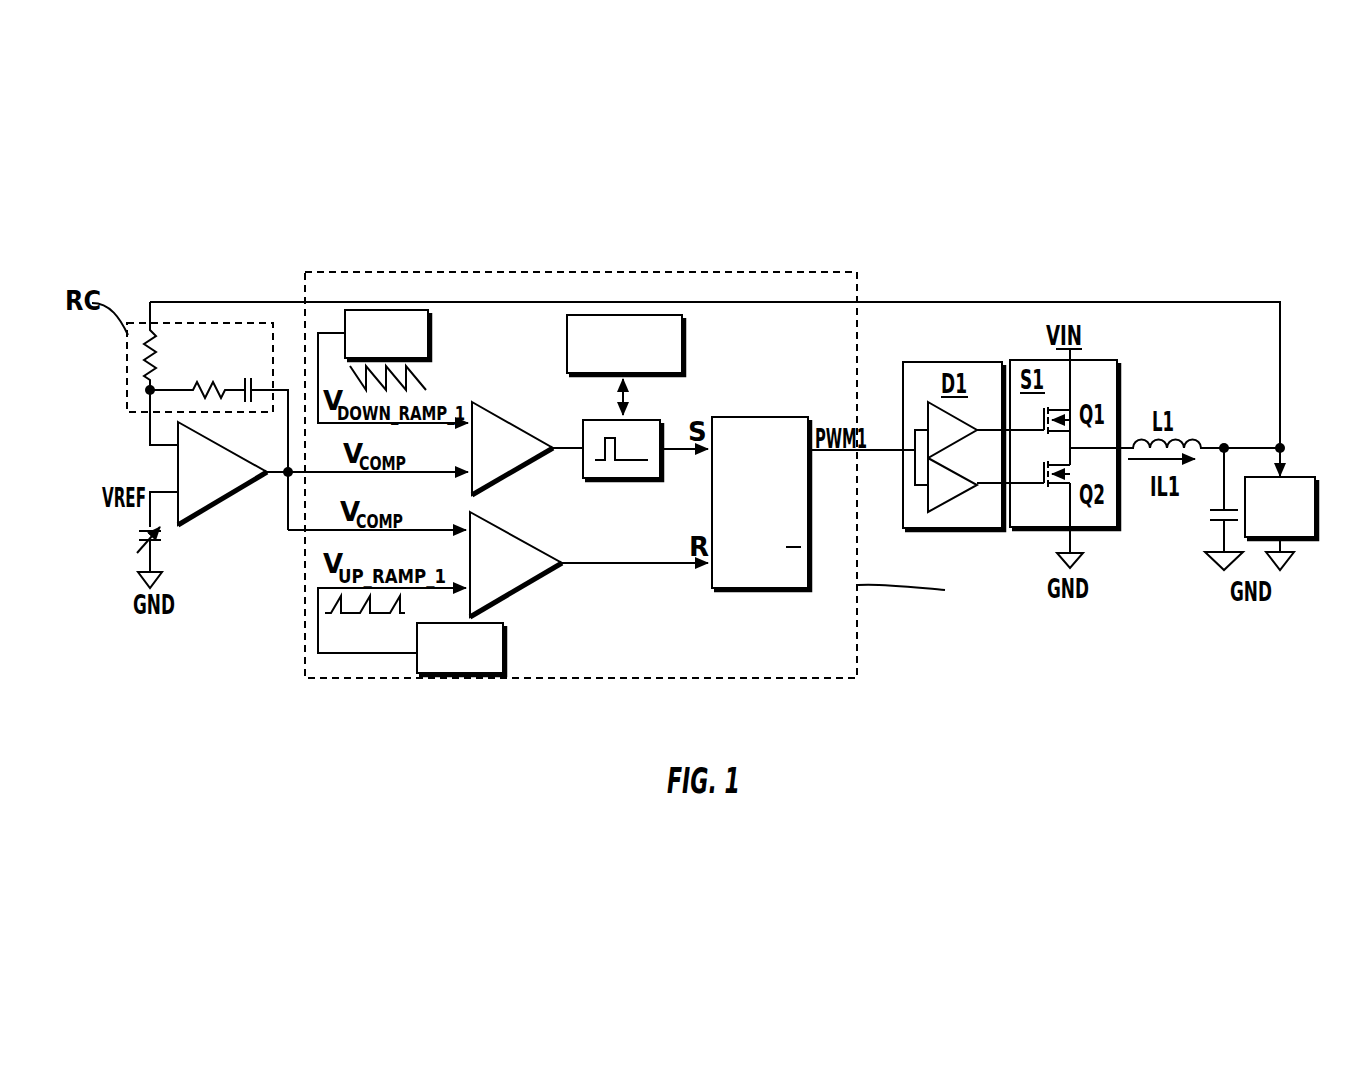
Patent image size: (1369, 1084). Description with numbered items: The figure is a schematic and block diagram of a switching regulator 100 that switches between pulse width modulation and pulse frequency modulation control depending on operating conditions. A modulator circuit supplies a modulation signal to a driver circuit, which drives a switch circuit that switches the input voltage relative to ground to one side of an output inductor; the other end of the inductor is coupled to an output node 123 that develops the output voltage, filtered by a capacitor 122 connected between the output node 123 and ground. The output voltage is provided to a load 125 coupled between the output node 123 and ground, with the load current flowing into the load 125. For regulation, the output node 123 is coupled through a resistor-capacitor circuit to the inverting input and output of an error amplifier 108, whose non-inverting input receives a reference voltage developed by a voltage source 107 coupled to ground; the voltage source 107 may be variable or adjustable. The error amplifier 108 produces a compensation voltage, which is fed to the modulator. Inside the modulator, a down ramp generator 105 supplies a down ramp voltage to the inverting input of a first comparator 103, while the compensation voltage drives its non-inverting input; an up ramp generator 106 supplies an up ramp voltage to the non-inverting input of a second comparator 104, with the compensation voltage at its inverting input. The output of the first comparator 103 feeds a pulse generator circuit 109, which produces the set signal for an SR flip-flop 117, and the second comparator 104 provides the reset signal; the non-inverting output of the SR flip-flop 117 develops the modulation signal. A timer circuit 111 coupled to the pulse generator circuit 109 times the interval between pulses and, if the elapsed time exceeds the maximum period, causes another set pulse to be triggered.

The switching regulator 100 is at (1001, 246).
The first comparator 103 is at (498, 412).
The second comparator 104 is at (535, 548).
The down ramp generator 105 is at (405, 350).
The up ramp generator 106 is at (478, 665).
The voltage source 107 is at (166, 521).
The error amplifier 108 is at (220, 507).
The pulse generator circuit 109 is at (582, 470).
The timer circuit 111 is at (627, 315).
The SR flip-flop 117 is at (752, 428).
The capacitor 122 is at (1212, 521).
The output node 123 is at (1286, 445).
The load 125 is at (1305, 540).